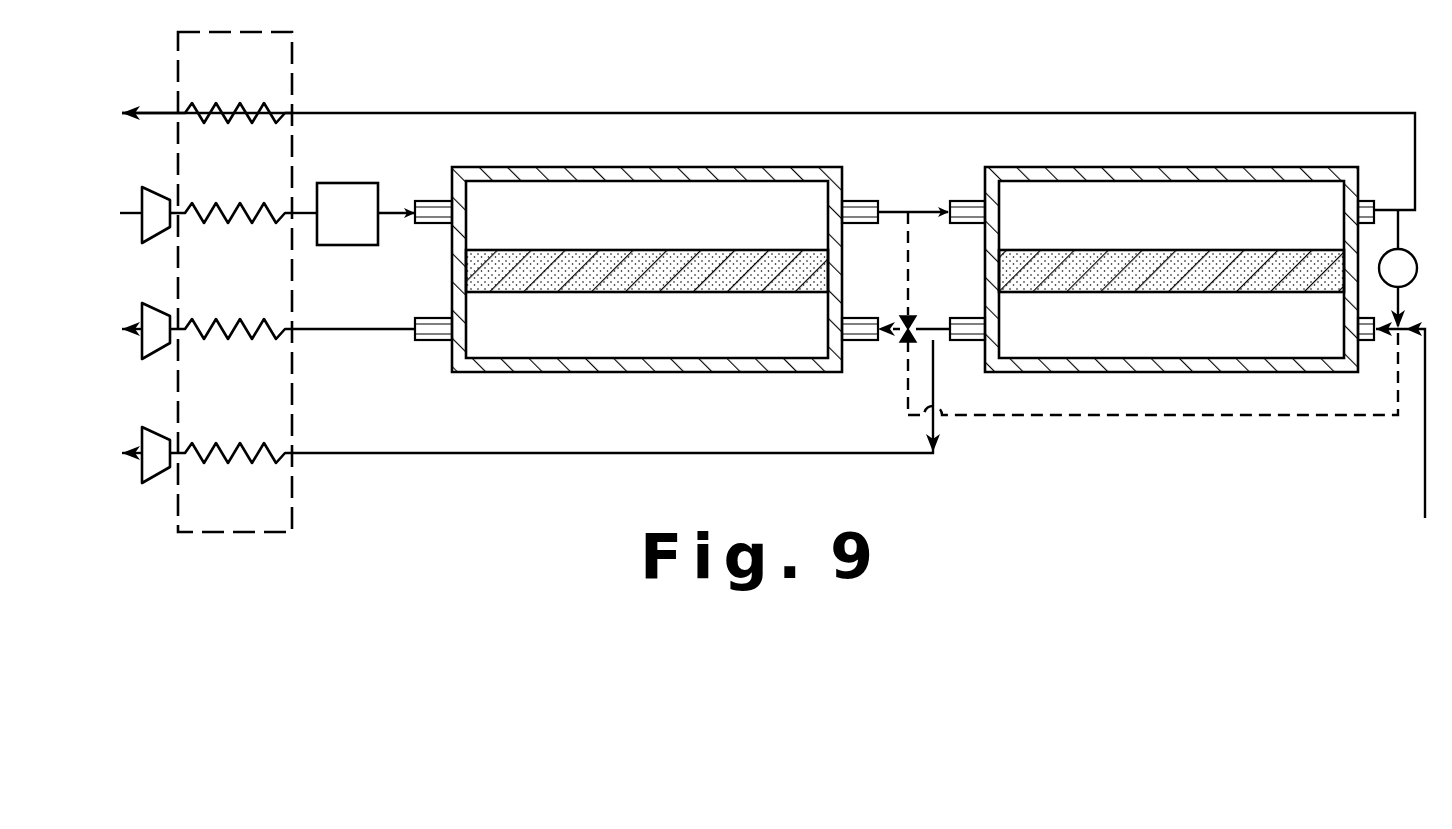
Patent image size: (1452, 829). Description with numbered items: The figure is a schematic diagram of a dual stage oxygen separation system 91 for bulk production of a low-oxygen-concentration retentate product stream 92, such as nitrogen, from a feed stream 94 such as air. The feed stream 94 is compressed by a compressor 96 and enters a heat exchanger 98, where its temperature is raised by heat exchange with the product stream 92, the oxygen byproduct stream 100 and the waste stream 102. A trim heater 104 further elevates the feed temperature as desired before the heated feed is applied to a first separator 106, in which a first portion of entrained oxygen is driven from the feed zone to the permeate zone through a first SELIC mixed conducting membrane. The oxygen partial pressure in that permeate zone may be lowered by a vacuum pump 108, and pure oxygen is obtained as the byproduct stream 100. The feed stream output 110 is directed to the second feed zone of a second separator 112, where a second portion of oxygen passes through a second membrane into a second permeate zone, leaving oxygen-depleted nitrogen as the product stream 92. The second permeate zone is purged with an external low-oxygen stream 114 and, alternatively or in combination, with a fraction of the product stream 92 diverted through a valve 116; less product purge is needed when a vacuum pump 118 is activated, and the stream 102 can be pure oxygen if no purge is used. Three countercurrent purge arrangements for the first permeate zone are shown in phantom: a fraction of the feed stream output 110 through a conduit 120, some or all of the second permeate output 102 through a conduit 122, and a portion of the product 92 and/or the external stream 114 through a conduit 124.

The system 91 is at (1068, 88).
The retentate product stream 92 is at (150, 112).
The feed stream 94 is at (128, 211).
The compressor 96 is at (161, 242).
The heat exchanger 98 is at (292, 78).
The oxygen byproduct stream 100 is at (332, 327).
The waste stream 102 is at (368, 451).
The trim heater 104 is at (348, 182).
The first separator 106 is at (732, 166).
The vacuum pump 108 is at (158, 358).
The feed stream output 110 is at (882, 210).
The second separator 112 is at (1265, 166).
The external stream 114 is at (1424, 490).
The valve 116 is at (1419, 262).
The vacuum pump 118 is at (164, 483).
The conduit 120 is at (908, 270).
The conduit 122 is at (921, 326).
The conduit 124 is at (906, 414).